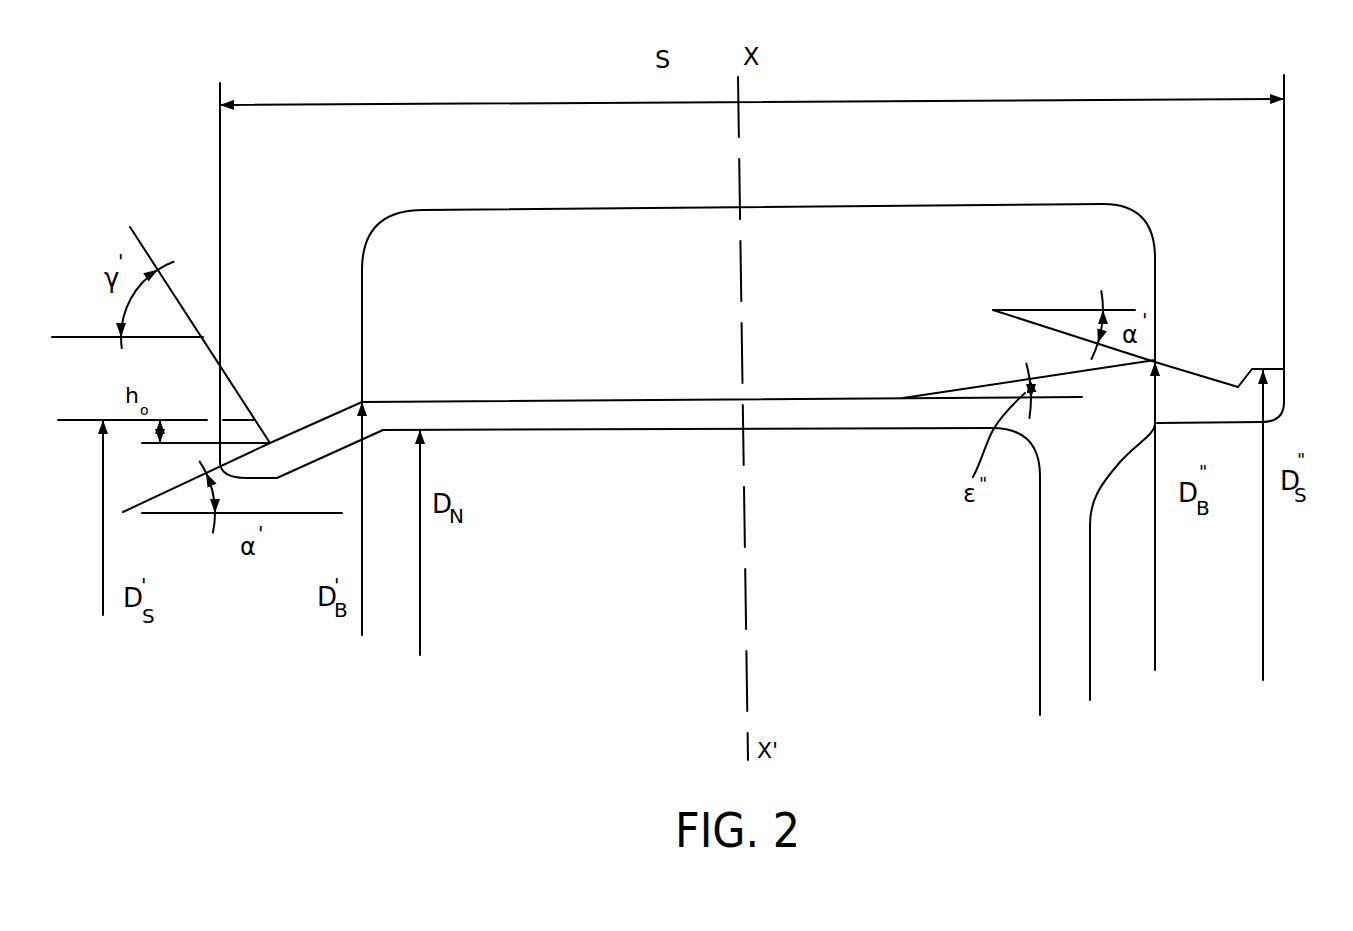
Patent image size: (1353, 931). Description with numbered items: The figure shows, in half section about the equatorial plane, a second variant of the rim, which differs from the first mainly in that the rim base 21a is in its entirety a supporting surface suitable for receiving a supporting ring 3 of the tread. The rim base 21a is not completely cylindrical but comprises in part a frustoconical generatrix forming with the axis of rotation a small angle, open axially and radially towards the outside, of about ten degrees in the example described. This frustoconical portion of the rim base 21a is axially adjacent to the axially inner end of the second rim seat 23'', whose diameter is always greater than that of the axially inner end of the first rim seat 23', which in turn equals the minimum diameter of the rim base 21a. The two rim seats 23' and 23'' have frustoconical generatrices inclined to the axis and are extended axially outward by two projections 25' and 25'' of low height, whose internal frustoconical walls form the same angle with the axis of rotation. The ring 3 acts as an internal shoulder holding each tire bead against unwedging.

The supporting ring 3 is at (672, 327).
The rim base 21a is at (628, 418).
The first rim seat 23' is at (326, 397).
The second rim seat 23'' is at (1208, 319).
The projection 25' is at (262, 434).
The projection 25'' is at (1294, 354).